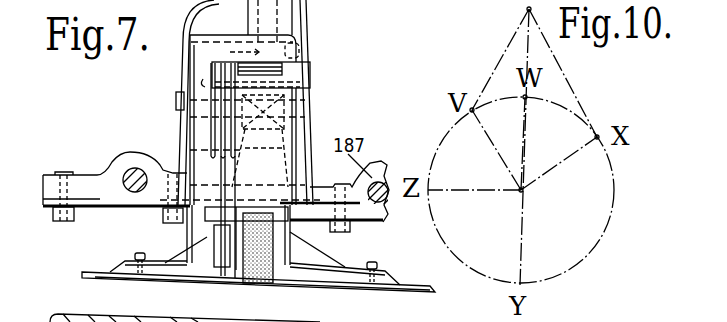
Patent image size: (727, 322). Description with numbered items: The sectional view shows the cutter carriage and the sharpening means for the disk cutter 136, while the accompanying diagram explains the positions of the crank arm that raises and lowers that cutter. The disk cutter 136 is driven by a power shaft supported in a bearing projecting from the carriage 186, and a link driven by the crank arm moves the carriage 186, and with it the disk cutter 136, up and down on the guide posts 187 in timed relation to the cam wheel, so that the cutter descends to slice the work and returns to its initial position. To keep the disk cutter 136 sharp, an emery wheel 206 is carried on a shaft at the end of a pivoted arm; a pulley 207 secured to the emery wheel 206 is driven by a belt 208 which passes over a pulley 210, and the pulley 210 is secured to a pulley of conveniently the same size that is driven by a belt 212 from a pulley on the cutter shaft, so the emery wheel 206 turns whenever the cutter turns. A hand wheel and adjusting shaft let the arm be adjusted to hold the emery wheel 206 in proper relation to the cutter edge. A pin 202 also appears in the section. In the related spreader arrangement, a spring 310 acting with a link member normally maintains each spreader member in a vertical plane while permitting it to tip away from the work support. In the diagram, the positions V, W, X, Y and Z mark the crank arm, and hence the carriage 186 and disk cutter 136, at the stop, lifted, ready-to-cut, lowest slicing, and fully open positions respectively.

The disk cutter 136 is at (415, 288).
The carriage 186 is at (95, 185).
The guide posts 187 is at (137, 175).
The pivot pin 202 is at (177, 106).
The emery wheel 206 is at (263, 275).
The pulley 207 is at (215, 267).
The belt 208 is at (222, 274).
The pulley 210 is at (312, 85).
The belt 212 is at (240, 133).
The spring 310 is at (138, 321).